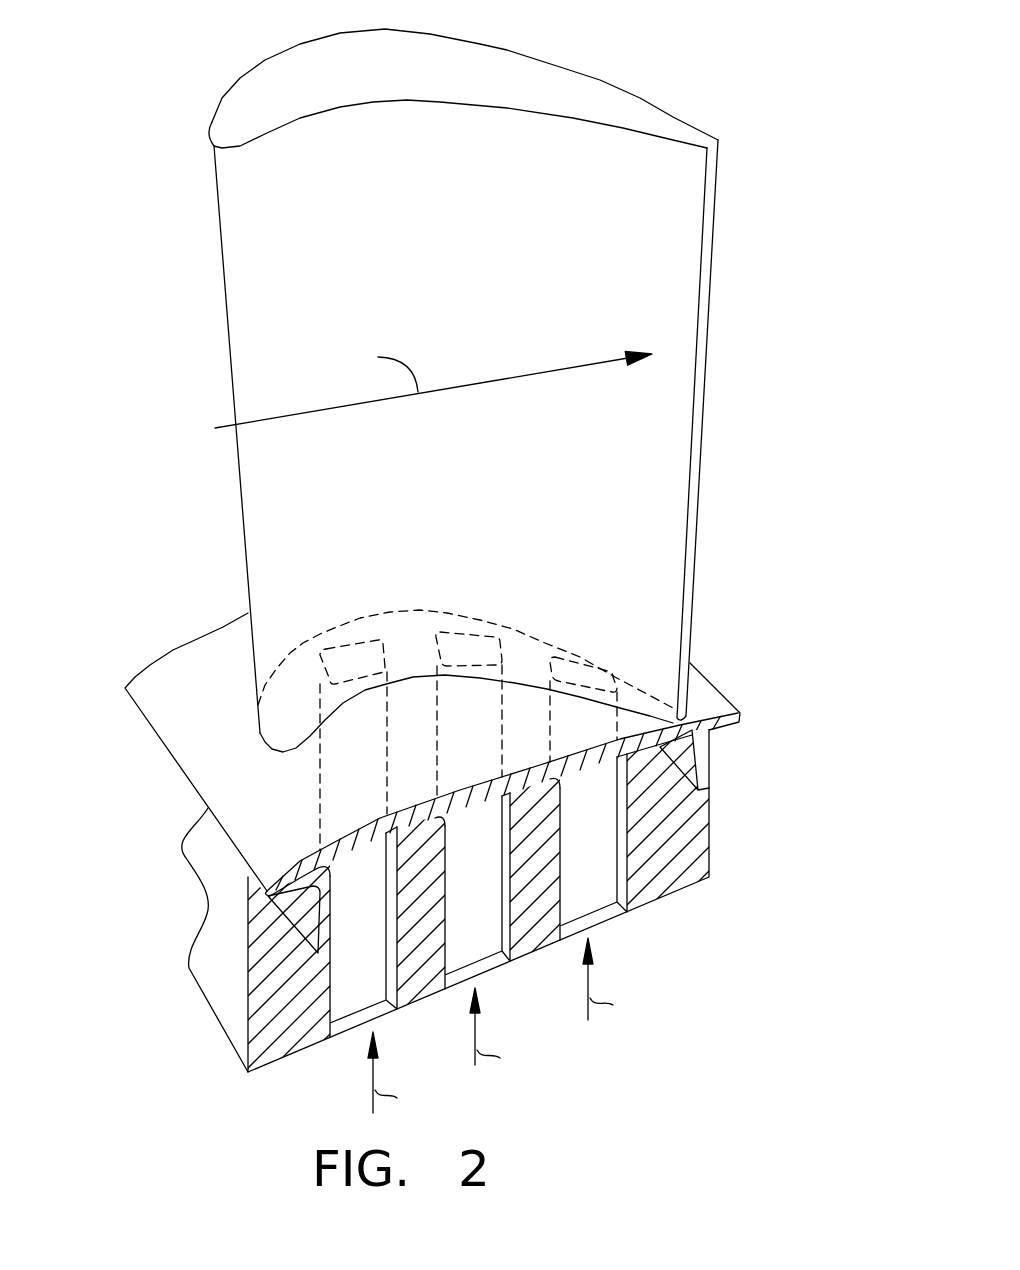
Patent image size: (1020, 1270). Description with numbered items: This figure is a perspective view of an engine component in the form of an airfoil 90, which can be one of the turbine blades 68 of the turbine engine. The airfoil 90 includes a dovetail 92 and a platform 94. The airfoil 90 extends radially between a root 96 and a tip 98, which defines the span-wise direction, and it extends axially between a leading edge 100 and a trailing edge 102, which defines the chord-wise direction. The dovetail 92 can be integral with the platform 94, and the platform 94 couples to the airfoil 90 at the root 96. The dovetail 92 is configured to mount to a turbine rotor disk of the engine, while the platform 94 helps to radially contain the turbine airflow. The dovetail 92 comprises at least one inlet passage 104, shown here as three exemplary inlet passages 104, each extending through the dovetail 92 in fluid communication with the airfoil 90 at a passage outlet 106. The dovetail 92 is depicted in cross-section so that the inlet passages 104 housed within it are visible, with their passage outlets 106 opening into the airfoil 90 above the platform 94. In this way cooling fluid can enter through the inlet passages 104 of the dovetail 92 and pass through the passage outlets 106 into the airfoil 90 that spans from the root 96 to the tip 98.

The turbine blade 68 is at (175, 135).
The airfoil 90 is at (183, 333).
The dovetail 92 is at (228, 935).
The platform 94 is at (175, 658).
The root 96 is at (642, 700).
The tip 98 is at (315, 77).
The leading edge 100 is at (218, 233).
The trailing edge 102 is at (715, 223).
The inlet passage 104 is at (347, 983).
The passage outlet 106 is at (347, 638).